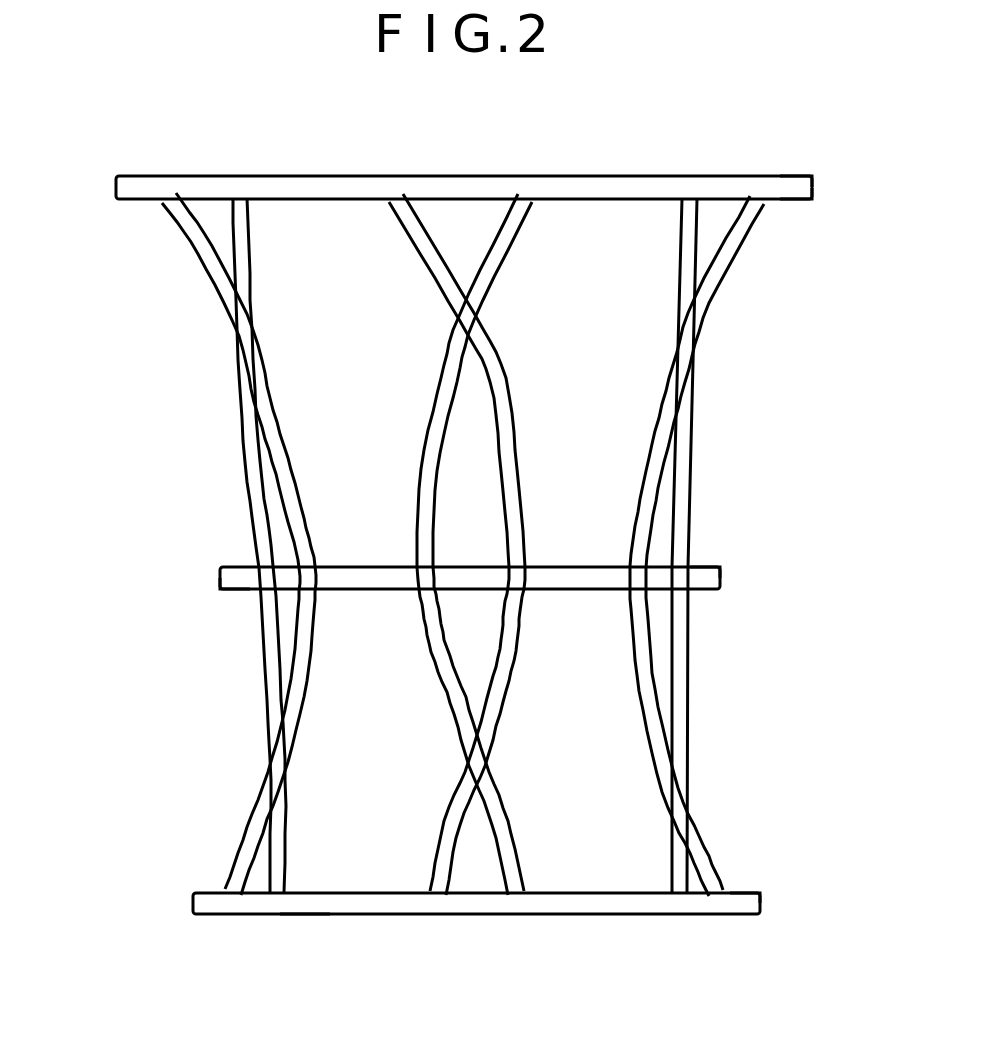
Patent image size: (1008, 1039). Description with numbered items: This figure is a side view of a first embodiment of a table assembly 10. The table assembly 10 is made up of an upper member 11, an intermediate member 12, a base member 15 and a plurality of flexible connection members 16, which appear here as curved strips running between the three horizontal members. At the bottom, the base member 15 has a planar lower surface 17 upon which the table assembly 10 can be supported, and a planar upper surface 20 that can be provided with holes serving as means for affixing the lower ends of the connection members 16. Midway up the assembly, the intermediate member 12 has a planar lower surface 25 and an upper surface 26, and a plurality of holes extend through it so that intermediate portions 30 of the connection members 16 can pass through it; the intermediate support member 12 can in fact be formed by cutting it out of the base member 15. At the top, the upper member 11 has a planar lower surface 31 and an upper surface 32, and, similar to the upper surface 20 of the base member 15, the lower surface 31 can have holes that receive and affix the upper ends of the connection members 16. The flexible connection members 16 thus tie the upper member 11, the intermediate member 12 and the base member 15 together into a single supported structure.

The table assembly 10 is at (737, 100).
The upper member 11 is at (116, 177).
The intermediate member 12 is at (722, 584).
The base member 15 is at (763, 906).
The flexible connection members 16 is at (720, 287).
The planar lower surface 17 is at (303, 914).
The planar upper surface 20 is at (740, 893).
The planar lower surface 25 is at (240, 590).
The upper surface 26 is at (715, 567).
The intermediate portions 30 is at (520, 538).
The planar lower surface 31 is at (798, 200).
The upper surface 32 is at (790, 176).